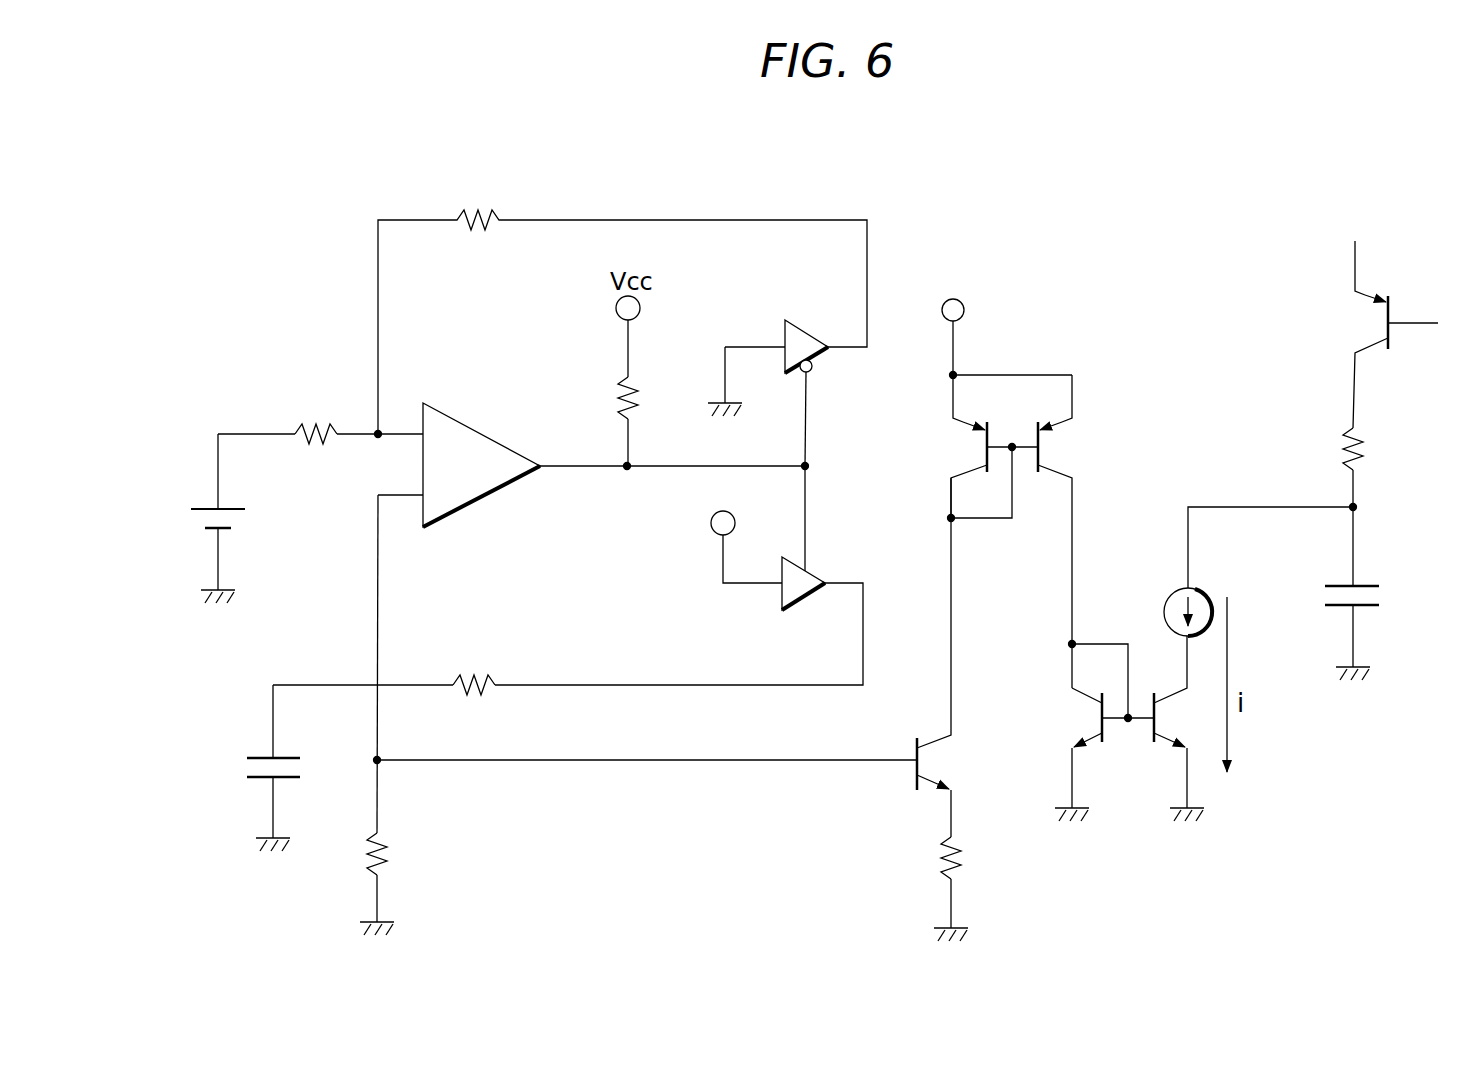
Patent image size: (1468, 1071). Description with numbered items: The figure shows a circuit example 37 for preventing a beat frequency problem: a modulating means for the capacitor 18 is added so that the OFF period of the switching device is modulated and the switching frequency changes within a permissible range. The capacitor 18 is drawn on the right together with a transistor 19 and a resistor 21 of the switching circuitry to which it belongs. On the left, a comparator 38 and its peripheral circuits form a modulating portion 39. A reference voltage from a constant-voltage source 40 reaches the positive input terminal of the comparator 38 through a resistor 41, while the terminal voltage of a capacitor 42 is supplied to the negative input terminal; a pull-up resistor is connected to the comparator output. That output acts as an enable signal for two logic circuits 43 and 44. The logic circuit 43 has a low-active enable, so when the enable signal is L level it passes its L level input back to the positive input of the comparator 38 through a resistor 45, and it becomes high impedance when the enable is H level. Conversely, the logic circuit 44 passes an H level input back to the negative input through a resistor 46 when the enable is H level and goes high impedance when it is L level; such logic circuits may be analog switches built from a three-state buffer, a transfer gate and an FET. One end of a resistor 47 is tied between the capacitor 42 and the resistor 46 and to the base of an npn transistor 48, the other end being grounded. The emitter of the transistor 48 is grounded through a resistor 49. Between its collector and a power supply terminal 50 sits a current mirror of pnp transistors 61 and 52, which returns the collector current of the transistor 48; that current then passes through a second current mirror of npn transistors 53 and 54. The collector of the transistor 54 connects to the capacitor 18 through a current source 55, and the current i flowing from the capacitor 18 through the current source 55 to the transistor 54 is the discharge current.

The capacitor 18 is at (1366, 585).
The transistor 19 is at (1392, 336).
The resistor 21 is at (1366, 440).
The circuit example 37 is at (1185, 232).
The comparator 38 is at (478, 428).
The modulating portion 39 is at (291, 276).
The constant-voltage source 40 is at (206, 508).
The resistor 41 is at (312, 424).
The capacitor 42 is at (258, 757).
The logic circuit 43 is at (806, 330).
The logic circuit 44 is at (802, 605).
The resistor 45 is at (476, 211).
The resistor 46 is at (471, 676).
The resistor 47 is at (388, 849).
The npn transistor 48 is at (911, 780).
The resistor 49 is at (963, 853).
The power supply terminal 50 is at (960, 298).
The pnp transistor 52 is at (1057, 470).
The npn transistor 53 is at (1076, 694).
The npn transistor 54 is at (1150, 744).
The current source 55 is at (1166, 610).
The transistor 61 is at (972, 472).